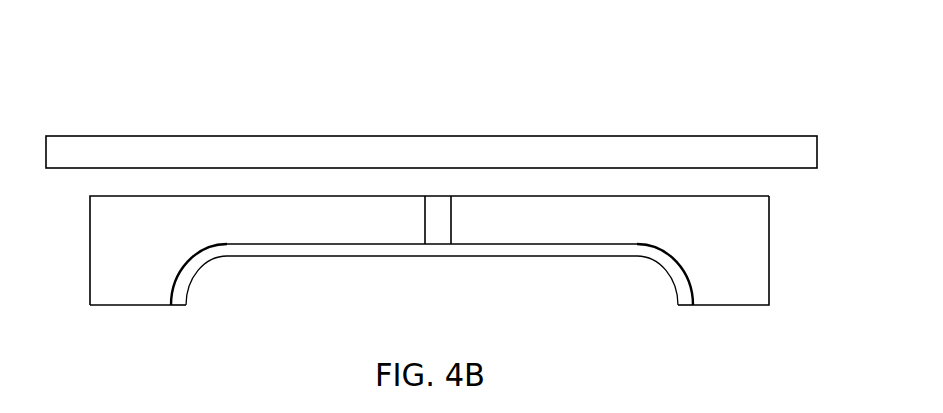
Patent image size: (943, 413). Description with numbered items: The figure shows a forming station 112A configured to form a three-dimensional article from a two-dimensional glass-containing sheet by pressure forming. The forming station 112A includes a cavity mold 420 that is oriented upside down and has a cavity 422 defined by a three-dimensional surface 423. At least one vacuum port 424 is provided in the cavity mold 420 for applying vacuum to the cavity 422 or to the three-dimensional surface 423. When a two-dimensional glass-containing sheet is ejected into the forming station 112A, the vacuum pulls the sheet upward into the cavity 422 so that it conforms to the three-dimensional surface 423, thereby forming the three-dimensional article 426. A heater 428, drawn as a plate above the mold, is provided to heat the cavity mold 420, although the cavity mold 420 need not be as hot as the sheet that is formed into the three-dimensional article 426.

The forming station 112A is at (367, 113).
The cavity mold 420 is at (218, 210).
The cavity 422 is at (597, 270).
The 3D surface 423 is at (248, 243).
The vacuum port 424 is at (435, 208).
The 3D article 426 is at (312, 248).
The heater 428 is at (532, 145).